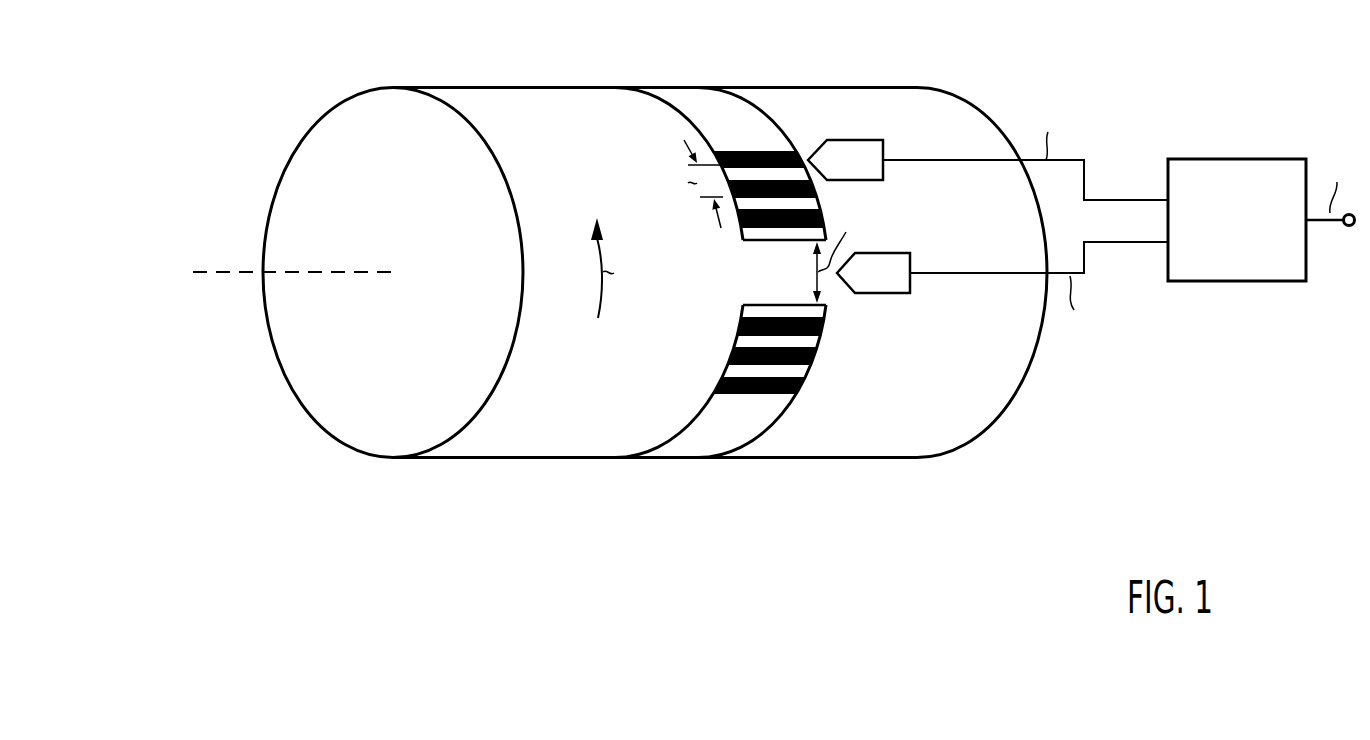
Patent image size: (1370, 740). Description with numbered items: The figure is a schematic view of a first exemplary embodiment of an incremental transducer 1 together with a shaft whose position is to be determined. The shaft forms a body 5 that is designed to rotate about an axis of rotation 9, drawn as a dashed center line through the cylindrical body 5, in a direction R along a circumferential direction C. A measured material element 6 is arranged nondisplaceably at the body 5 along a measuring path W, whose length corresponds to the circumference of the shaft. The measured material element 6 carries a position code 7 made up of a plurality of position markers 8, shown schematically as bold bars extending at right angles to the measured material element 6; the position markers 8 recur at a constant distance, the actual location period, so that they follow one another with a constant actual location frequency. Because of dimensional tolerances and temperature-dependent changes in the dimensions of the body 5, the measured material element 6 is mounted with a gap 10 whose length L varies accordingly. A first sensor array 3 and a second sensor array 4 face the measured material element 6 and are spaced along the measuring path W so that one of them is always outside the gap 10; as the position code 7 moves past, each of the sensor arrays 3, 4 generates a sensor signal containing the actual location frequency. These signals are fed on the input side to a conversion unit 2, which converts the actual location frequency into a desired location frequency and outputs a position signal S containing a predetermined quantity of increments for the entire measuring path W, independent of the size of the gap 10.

The incremental transducer 1 is at (780, 267).
The conversion unit 2 is at (1228, 236).
The first sensor array 3 is at (893, 294).
The second sensor array 4 is at (884, 150).
The body 5 is at (487, 460).
The measured material element 6 is at (672, 100).
The position code 7 is at (713, 343).
The position markers 8 is at (772, 393).
The axis of rotation 9 is at (206, 270).
The gap 10 is at (767, 288).